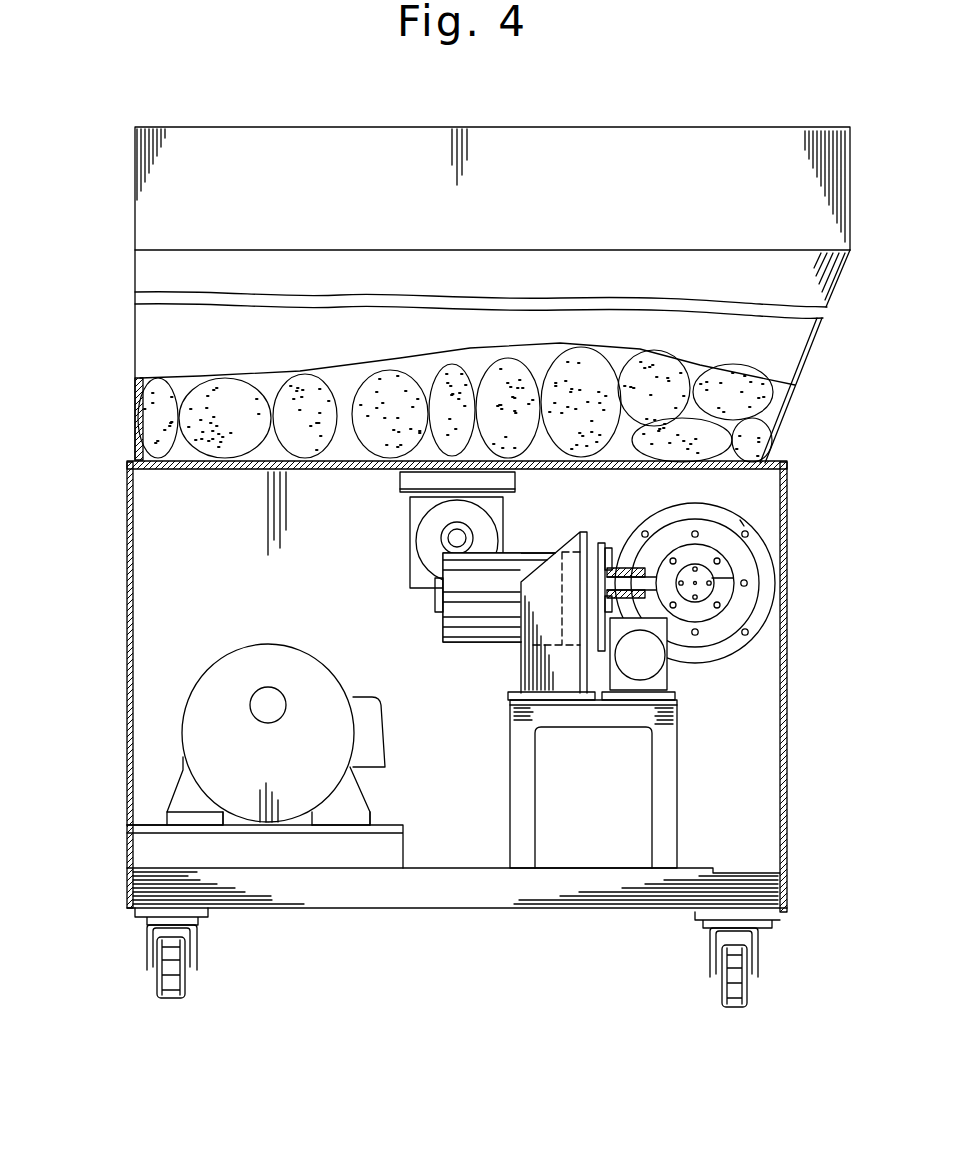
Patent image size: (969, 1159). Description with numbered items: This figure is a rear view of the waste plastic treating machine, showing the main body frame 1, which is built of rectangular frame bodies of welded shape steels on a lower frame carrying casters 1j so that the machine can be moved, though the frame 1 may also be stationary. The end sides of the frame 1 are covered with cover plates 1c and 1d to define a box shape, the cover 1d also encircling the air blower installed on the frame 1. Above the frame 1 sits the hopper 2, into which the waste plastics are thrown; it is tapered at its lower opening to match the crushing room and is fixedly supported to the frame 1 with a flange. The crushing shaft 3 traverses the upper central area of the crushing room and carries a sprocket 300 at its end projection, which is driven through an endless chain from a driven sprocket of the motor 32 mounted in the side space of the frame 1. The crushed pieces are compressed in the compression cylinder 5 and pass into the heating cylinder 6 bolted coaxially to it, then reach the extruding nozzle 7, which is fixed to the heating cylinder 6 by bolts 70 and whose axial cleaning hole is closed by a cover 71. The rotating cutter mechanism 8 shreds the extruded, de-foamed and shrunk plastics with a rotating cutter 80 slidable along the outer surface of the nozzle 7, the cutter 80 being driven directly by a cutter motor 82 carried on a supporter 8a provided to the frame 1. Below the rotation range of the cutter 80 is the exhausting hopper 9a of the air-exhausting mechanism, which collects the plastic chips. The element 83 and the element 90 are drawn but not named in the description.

The main body frame 1 is at (787, 788).
The cover plate 1c is at (127, 652).
The cover plate 1d is at (787, 703).
The casters 1j is at (178, 972).
The hopper 2 is at (820, 220).
The crushing shaft 3 is at (452, 540).
The sprocket 300 is at (427, 523).
The compression cylinder 5 is at (738, 560).
The heating cylinder 6 is at (745, 580).
The extruding nozzle 7 is at (770, 622).
The bolts 70 is at (718, 605).
The cover 71 is at (728, 594).
The rotating cutter mechanism 8 is at (479, 617).
The rotating cutter 80 is at (753, 530).
The cutter motor 82 is at (468, 627).
The reduction gear housing 83 is at (528, 663).
The supporter 8a is at (513, 803).
The exhausting hopper 9a is at (667, 662).
The bearing base plate 90 is at (672, 678).
The motor 32 is at (203, 737).